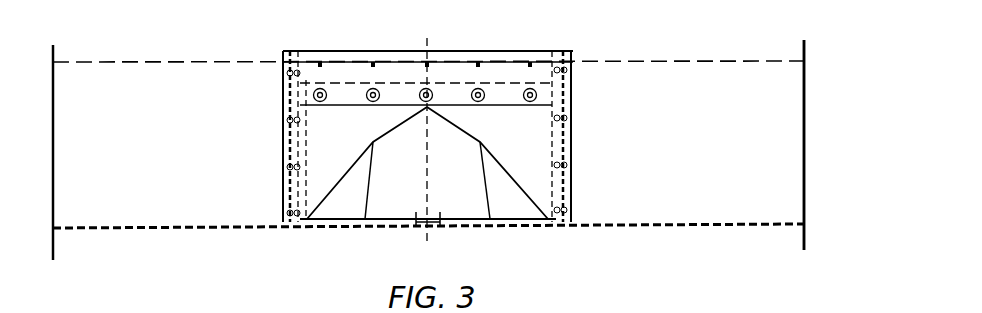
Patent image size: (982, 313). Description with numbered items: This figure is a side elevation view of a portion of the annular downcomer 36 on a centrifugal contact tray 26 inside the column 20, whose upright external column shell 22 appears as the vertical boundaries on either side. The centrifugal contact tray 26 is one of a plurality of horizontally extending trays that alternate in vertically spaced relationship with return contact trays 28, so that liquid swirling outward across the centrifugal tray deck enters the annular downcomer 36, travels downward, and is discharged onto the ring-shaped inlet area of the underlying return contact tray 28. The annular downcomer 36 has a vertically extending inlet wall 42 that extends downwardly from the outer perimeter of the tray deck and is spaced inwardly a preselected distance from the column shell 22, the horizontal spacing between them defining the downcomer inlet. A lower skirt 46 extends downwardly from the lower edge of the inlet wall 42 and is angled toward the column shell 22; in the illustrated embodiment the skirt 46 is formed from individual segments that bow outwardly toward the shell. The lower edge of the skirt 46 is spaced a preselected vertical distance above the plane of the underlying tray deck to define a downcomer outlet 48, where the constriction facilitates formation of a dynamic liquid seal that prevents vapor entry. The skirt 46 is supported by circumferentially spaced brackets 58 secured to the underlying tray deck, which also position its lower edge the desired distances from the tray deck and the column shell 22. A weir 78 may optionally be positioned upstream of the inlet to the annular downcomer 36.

The column 20 is at (808, 100).
The column shell 22 is at (806, 126).
The centrifugal contact tray 26 is at (684, 46).
The return contact tray 28 is at (673, 222).
The annular downcomer 36 is at (502, 136).
The inlet wall 42 is at (545, 90).
The lower skirt 46 is at (503, 188).
The downcomer outlet 48 is at (535, 219).
The bracket 58 is at (458, 226).
The weir 78 is at (542, 50).